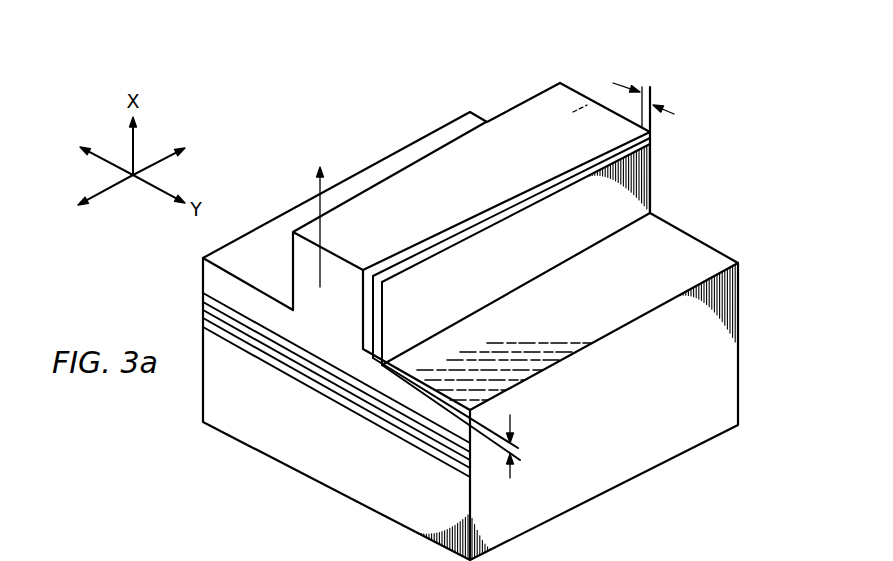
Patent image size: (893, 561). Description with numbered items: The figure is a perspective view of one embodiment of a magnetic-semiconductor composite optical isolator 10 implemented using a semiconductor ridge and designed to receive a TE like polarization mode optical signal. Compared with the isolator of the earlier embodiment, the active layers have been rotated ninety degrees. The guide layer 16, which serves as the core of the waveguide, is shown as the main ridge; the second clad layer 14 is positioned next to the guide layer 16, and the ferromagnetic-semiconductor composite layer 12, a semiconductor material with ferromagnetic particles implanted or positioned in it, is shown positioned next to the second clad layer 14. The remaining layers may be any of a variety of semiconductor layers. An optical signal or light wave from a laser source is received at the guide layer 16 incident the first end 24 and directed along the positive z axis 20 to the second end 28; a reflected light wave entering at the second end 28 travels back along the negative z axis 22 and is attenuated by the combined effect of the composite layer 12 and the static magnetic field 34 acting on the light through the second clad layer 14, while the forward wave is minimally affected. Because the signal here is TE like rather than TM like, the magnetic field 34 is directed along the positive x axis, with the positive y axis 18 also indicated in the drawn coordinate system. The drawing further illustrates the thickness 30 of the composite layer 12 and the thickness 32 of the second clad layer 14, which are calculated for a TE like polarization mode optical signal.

The magnetic-semiconductor composite optical isolator 10 is at (272, 121).
The ferromagnetic-semiconductor composite layer 12 is at (453, 237).
The second clad layer 14 is at (502, 203).
The guide layer 16 is at (517, 114).
The positive y axis 18 is at (105, 160).
The positive z axis 20 is at (152, 165).
The negative z axis 22 is at (108, 189).
The first end 24 is at (205, 272).
The second end 28 is at (590, 101).
The thickness of the FC layer 30 is at (674, 114).
The thickness of the second clad layer 32 is at (510, 478).
The static magnetic field 34 is at (320, 184).